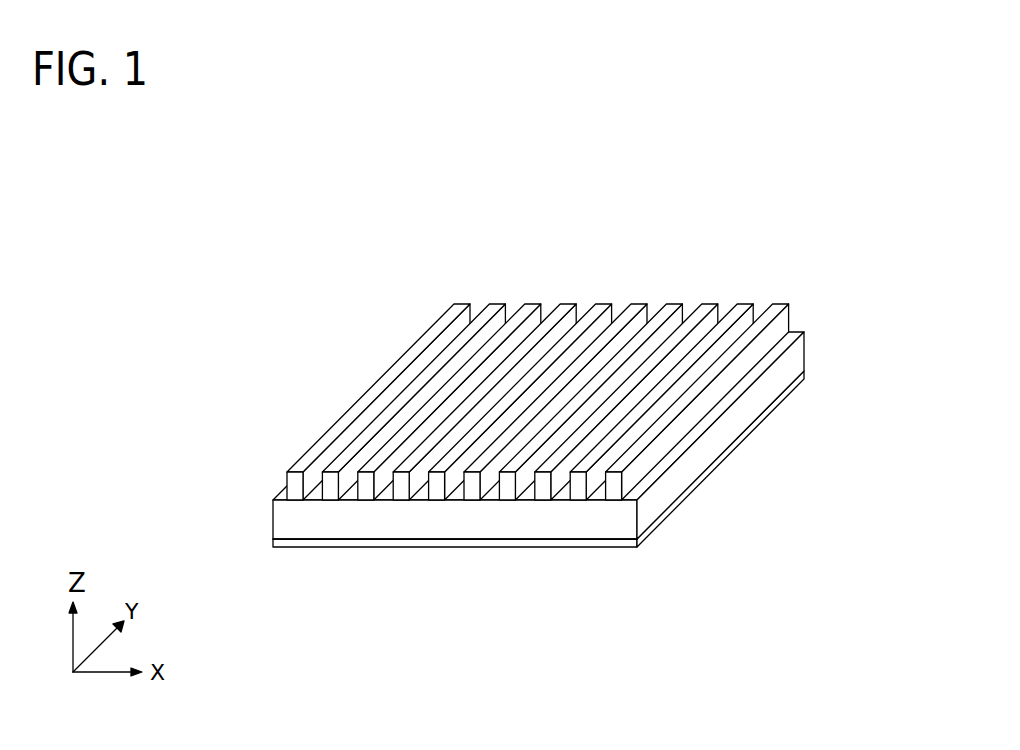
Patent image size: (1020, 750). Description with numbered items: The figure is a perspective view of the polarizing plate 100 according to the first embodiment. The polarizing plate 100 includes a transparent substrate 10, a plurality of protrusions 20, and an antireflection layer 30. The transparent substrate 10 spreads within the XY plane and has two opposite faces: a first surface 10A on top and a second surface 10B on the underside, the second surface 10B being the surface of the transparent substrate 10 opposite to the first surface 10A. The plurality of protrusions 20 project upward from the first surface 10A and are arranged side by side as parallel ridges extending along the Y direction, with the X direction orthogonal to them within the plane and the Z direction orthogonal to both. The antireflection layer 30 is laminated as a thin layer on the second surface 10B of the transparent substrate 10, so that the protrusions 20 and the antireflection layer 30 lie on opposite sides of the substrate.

The polarizing plate 100 is at (497, 357).
The transparent substrate 10 is at (482, 461).
The first surface 10A is at (283, 498).
The second surface 10B is at (285, 547).
The protrusions 20 is at (710, 297).
The antireflection layer 30 is at (662, 520).